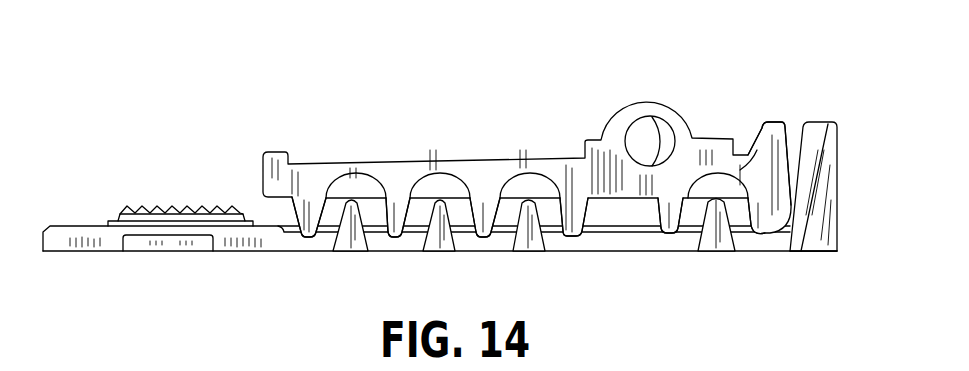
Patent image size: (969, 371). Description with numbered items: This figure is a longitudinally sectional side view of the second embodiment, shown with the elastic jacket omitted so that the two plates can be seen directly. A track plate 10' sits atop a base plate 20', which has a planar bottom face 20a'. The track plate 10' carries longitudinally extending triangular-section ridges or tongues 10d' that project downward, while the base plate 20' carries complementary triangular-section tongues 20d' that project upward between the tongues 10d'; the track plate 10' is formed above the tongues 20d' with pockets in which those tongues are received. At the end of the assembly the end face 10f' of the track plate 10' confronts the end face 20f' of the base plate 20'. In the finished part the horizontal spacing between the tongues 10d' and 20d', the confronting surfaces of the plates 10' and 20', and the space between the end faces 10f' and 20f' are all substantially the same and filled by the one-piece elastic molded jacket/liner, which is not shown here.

The track plate 10' is at (527, 167).
The tongues of the track plate 10d' is at (528, 251).
The end face of the track plate 10f' is at (770, 135).
The base plate 20' is at (440, 260).
The tongues of the base plate 20d' is at (534, 253).
The end face of the base plate 20f' is at (821, 158).
The planar bottom face 20a' is at (820, 281).